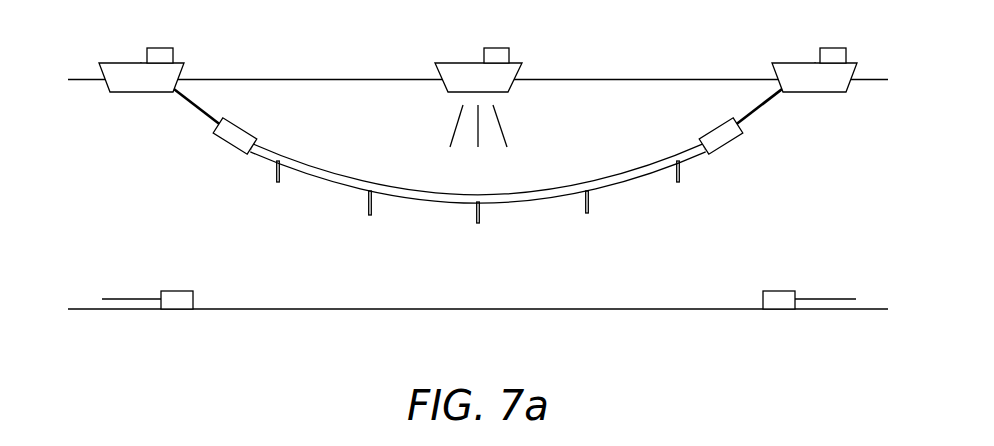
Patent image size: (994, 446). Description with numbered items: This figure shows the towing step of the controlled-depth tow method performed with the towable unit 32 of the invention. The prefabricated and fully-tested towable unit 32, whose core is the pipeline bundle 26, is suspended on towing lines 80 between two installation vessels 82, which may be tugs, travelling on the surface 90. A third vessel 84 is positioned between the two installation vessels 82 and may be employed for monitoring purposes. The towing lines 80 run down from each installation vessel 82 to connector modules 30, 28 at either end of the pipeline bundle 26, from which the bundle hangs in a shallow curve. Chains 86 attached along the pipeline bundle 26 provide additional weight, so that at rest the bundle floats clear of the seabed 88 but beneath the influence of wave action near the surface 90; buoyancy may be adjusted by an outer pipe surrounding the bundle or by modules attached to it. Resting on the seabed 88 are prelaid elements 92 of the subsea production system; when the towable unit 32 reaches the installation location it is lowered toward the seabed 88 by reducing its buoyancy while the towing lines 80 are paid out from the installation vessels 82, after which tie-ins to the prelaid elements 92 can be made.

The pipeline bundle 26 is at (333, 170).
The connector module 28 is at (724, 140).
The connector module 30 is at (232, 140).
The towable unit 32 is at (538, 240).
The towing lines 80 is at (185, 104).
The installation vessels 82 is at (158, 53).
The third vessel 84 is at (494, 53).
The chains 86 is at (278, 184).
The seabed 88 is at (480, 311).
The surface 90 is at (321, 78).
The prelaid elements 92 is at (175, 290).